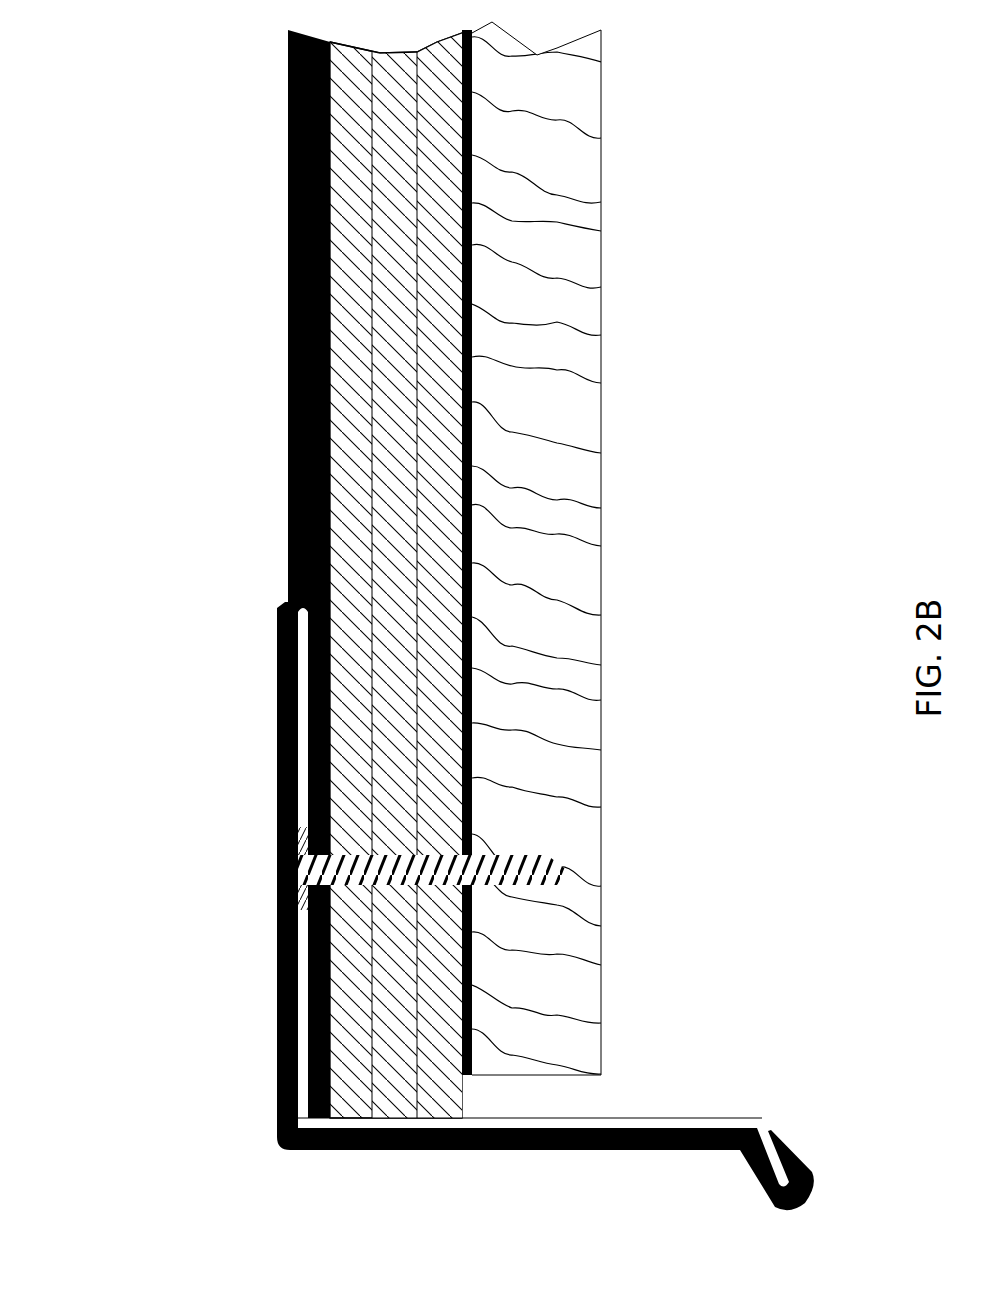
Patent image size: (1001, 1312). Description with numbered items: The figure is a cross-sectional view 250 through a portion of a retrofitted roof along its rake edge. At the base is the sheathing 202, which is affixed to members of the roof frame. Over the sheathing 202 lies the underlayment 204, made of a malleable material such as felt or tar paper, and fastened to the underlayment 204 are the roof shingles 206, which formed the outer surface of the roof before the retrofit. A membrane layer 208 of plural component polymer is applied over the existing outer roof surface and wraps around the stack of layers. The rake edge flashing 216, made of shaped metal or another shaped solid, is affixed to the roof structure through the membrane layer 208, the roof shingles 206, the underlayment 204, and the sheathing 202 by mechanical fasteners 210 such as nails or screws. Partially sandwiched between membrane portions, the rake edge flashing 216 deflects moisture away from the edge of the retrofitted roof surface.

The cross-sectional view 250 is at (229, 949).
The sheathing 202 is at (529, 659).
The underlayment 204 is at (467, 537).
The roof shingles 206 is at (400, 462).
The membrane layer 208 is at (307, 507).
The mechanical fasteners 210 is at (498, 878).
The rake edge flashing 216 is at (622, 1117).